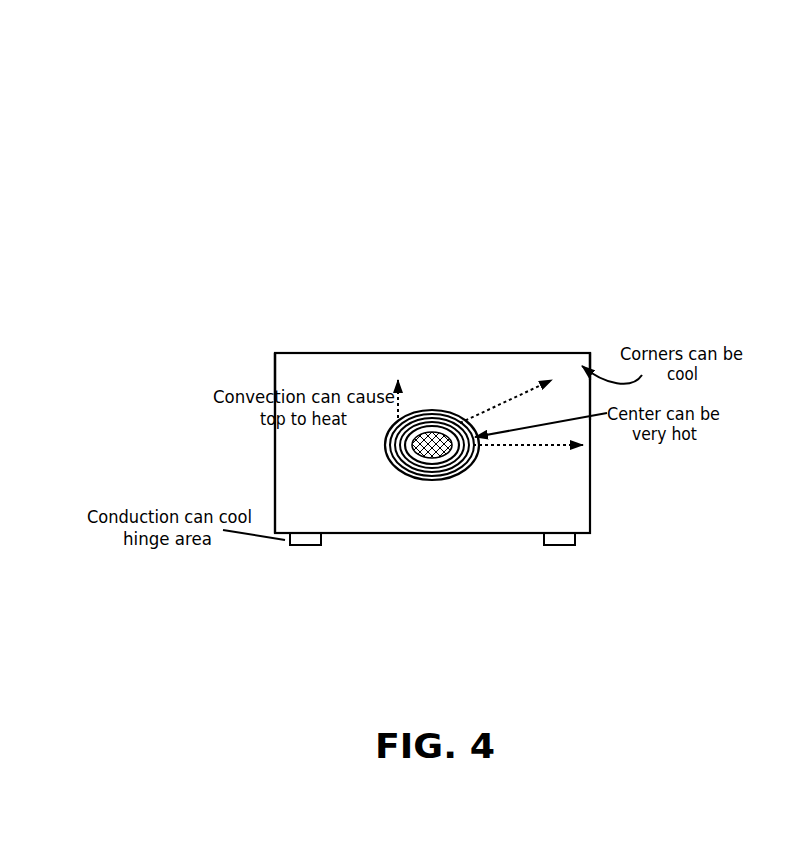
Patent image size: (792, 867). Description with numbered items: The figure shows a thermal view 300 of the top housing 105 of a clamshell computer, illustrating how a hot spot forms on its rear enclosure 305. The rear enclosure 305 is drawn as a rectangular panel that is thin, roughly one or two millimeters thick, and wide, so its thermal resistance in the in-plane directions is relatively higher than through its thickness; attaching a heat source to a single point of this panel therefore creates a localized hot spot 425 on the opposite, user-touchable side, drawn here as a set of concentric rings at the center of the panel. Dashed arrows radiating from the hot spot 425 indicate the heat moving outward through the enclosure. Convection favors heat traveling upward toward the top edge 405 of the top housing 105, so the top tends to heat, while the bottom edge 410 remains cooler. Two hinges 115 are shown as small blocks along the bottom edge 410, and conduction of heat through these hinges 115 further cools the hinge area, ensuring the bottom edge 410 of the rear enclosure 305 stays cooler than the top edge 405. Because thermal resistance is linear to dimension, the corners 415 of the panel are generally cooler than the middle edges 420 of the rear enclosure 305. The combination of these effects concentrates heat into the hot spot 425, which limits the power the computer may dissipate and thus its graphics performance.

The computing device thermal diagram 300 is at (350, 118).
The top housing 105 is at (619, 287).
The corners 415 is at (283, 357).
The top edge 405 is at (353, 357).
The hot spot 425 is at (435, 395).
The rear enclosure 305 is at (541, 355).
The middle edges 420 is at (280, 447).
The bottom edge 410 is at (400, 517).
The hinges 115 is at (283, 547).